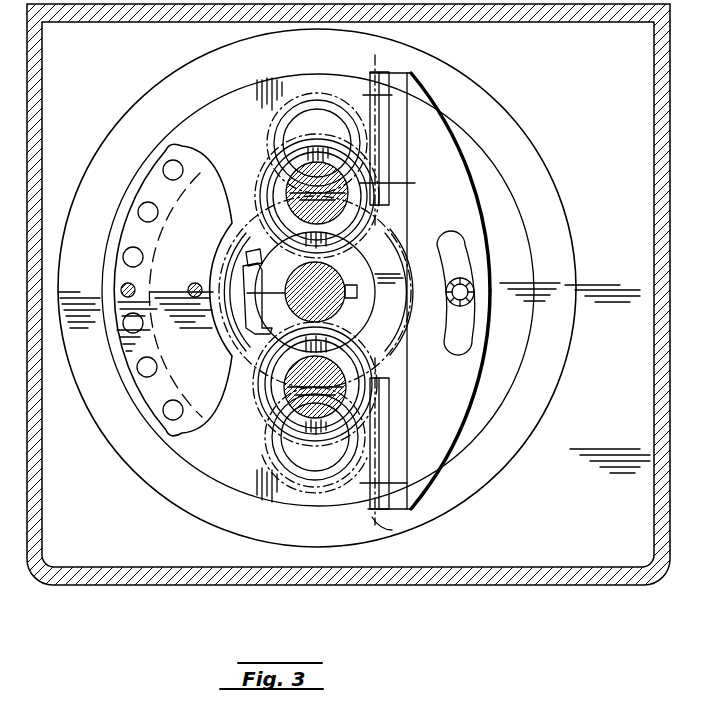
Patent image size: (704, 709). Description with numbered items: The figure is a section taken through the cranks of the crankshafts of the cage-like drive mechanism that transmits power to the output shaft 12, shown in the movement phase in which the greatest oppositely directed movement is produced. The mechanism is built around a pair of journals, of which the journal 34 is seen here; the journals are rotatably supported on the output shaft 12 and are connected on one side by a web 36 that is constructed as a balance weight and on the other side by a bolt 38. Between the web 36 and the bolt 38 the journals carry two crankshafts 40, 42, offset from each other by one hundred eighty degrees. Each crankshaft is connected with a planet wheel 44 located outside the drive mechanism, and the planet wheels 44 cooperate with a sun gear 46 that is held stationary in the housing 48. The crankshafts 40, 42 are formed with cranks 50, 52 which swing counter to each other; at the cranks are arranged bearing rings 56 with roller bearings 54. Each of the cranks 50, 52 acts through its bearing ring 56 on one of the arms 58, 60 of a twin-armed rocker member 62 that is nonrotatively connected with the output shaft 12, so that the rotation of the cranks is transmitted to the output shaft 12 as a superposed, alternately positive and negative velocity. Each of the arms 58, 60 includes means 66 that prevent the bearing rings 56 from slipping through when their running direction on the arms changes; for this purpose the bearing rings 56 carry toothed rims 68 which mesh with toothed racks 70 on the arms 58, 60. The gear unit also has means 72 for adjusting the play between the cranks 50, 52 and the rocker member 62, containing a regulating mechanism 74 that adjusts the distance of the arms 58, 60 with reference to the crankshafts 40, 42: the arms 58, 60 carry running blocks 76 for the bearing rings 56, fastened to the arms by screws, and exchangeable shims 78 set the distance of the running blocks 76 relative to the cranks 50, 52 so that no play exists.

The output shaft 12 is at (338, 308).
The journal 34 is at (192, 452).
The web 36 is at (153, 398).
The bolt 38 is at (468, 280).
The crankshaft 40 is at (305, 455).
The crankshaft 42 is at (327, 122).
The planet wheel 44 is at (270, 130).
The sun gear 46 is at (405, 225).
The housing 48 is at (522, 581).
The crank 50 is at (292, 362).
The crank 52 is at (240, 229).
The roller bearings 54 is at (290, 374).
The bearing ring 56 is at (278, 392).
The arm 58 is at (452, 460).
The arm 60 is at (398, 127).
The rocker member 62 is at (473, 169).
The means for preventing slipping 66 is at (358, 470).
The toothed rim 68 is at (262, 185).
The toothed rack 70 is at (390, 528).
The means for adjusting play 72 is at (426, 178).
The regulating mechanism 74 is at (413, 89).
The running block 76 is at (383, 157).
The shim 78 is at (410, 76).